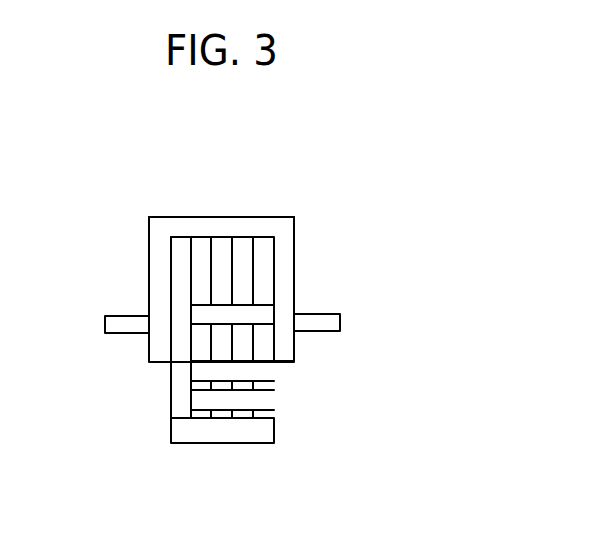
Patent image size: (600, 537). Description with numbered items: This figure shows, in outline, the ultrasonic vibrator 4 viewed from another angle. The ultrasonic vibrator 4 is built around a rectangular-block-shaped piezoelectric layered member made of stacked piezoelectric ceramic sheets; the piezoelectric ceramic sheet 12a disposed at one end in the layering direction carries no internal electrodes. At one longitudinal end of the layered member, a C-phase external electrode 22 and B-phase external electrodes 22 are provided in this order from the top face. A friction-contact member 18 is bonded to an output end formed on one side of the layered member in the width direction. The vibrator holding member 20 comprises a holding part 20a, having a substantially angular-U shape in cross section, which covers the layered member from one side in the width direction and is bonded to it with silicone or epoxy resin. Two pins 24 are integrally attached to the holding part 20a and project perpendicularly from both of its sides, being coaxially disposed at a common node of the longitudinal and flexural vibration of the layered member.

The ultrasonic vibrator 4 is at (317, 163).
The vibrator holding member 20 is at (174, 198).
The holding part 20a is at (230, 225).
The piezoelectric ceramic sheet 12a is at (180, 402).
The external electrode 22 is at (262, 305).
The friction-contact member 18 is at (215, 430).
The pin 24 is at (121, 327).